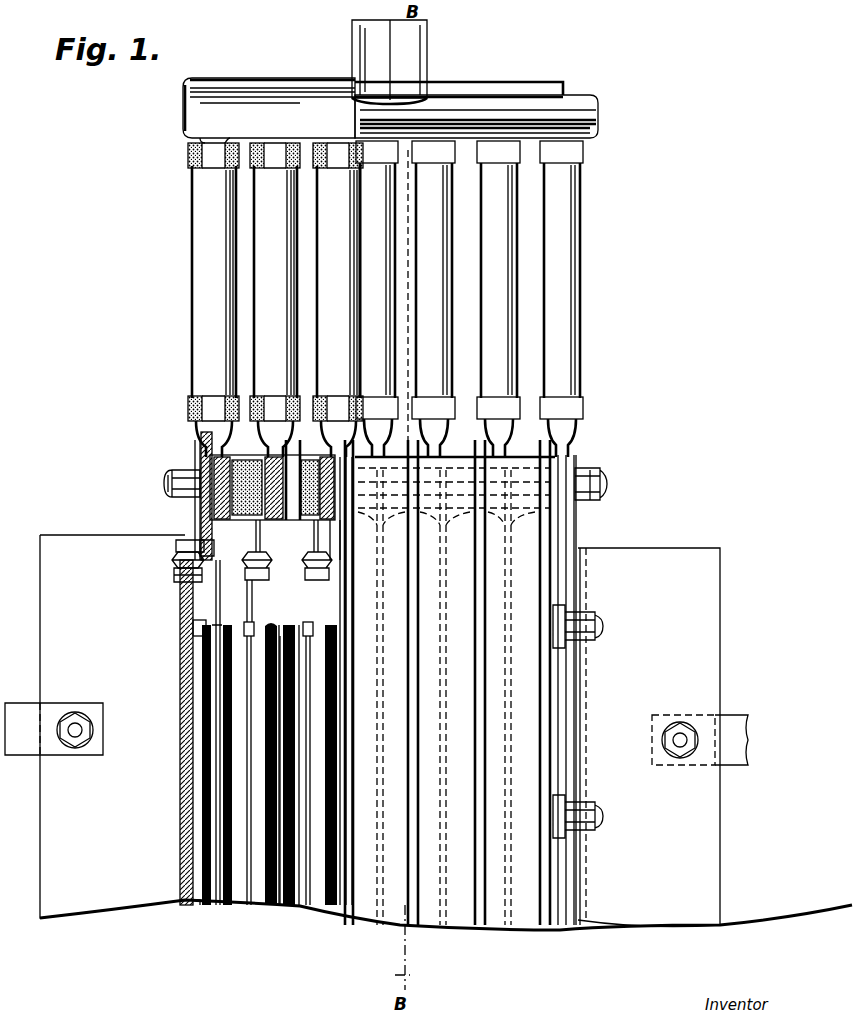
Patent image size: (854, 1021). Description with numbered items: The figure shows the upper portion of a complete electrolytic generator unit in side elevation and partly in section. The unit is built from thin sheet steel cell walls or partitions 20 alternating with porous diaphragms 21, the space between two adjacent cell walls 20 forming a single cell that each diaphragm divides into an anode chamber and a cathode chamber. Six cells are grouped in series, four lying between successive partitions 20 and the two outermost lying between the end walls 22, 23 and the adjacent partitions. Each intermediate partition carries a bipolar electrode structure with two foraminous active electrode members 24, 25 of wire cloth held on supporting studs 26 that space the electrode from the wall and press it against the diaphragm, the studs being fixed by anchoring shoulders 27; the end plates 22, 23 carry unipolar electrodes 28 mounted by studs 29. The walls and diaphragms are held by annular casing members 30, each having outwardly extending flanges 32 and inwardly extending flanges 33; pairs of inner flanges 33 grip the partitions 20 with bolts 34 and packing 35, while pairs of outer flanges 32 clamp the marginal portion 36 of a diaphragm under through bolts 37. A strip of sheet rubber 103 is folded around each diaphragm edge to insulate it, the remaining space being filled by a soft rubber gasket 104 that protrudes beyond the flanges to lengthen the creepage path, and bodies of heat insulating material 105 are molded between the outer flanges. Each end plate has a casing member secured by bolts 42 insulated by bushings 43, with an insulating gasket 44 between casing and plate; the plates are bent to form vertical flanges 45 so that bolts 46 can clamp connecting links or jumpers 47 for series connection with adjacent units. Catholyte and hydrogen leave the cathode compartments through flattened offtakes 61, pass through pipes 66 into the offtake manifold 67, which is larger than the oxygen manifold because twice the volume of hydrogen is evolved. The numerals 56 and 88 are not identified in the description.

The cell walls or partitions 20 is at (240, 906).
The porous diaphragms 21 is at (300, 676).
The end wall 22 is at (180, 726).
The end wall 23 is at (578, 718).
The active electrode member 24 is at (333, 772).
The active electrode member 25 is at (270, 806).
The supporting studs 26 is at (267, 624).
The anchoring shoulders 27 is at (248, 622).
The unipolar electrodes 28 is at (197, 900).
The studs 29 is at (193, 629).
The annular frames or casing members 30 is at (201, 546).
The outwardly extending flanges 32 is at (230, 464).
The inwardly extending flanges 33 is at (342, 545).
The bolts 34 is at (245, 595).
The packing 35 is at (307, 622).
The marginal portion of diaphragm 36 is at (200, 512).
The through bolts 37 is at (170, 480).
The bolts 42 is at (176, 553).
The insulating bushings 43 is at (178, 580).
The insulating gasket 44 is at (182, 545).
The vertical flanges 45 is at (70, 540).
The bolts 46 is at (78, 728).
The connecting links or jumpers 47 is at (20, 765).
The header 56 is at (584, 108).
The catholyte and hydrogen offtakes 61 is at (196, 447).
The pipes 66 is at (517, 282).
The offtake manifold 67 is at (238, 83).
The pipe 88 is at (352, 42).
The strip of sheet rubber 103 is at (203, 528).
The gasket 104 is at (240, 442).
The bodies of heat insulating material 105 is at (308, 462).